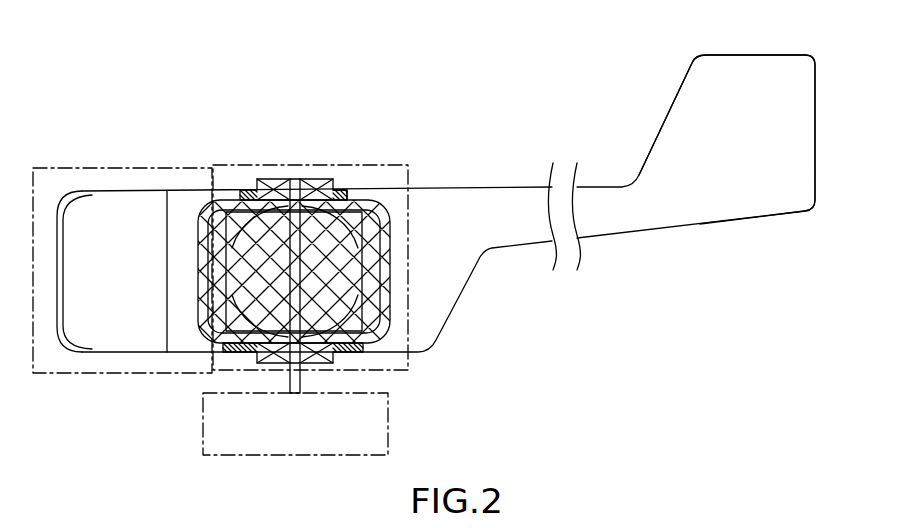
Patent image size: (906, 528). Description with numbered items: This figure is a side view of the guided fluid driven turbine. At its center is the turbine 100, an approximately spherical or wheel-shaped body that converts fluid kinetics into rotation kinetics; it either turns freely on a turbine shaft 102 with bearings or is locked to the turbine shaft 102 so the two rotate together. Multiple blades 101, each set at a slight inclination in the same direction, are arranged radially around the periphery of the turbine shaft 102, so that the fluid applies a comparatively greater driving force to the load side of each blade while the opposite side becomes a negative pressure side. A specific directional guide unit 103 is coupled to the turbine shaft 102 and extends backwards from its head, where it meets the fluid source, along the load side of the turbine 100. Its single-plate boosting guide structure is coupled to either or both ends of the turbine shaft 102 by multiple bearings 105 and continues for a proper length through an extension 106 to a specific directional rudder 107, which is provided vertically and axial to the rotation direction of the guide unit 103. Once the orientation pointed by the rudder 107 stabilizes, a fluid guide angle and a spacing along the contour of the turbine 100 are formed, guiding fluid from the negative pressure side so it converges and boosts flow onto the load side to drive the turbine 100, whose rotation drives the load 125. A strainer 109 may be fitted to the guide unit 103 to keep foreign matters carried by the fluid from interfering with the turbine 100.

The turbine 100 is at (242, 165).
The blades 101 is at (227, 203).
The turbine shaft 102 is at (292, 179).
The specific directional guide unit 103 is at (92, 168).
The bearings 105 is at (313, 179).
The extension 106 is at (476, 207).
The specific directional rudder 107 is at (733, 78).
The strainer 109 is at (358, 190).
The load 125 is at (388, 418).